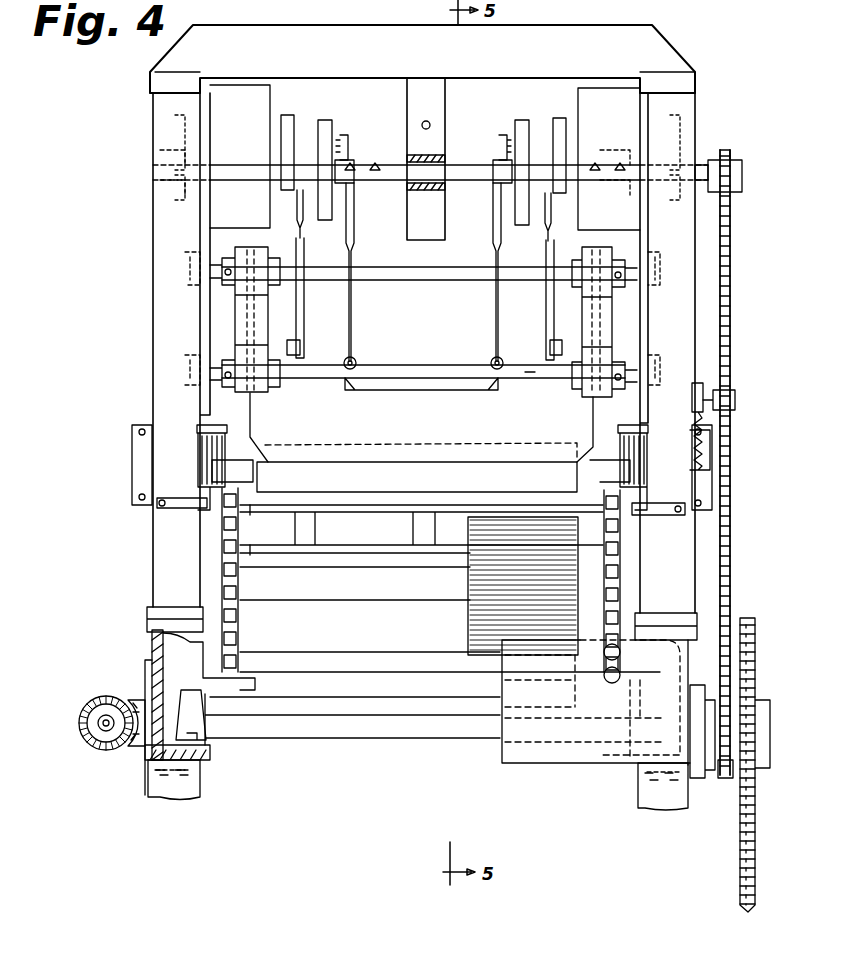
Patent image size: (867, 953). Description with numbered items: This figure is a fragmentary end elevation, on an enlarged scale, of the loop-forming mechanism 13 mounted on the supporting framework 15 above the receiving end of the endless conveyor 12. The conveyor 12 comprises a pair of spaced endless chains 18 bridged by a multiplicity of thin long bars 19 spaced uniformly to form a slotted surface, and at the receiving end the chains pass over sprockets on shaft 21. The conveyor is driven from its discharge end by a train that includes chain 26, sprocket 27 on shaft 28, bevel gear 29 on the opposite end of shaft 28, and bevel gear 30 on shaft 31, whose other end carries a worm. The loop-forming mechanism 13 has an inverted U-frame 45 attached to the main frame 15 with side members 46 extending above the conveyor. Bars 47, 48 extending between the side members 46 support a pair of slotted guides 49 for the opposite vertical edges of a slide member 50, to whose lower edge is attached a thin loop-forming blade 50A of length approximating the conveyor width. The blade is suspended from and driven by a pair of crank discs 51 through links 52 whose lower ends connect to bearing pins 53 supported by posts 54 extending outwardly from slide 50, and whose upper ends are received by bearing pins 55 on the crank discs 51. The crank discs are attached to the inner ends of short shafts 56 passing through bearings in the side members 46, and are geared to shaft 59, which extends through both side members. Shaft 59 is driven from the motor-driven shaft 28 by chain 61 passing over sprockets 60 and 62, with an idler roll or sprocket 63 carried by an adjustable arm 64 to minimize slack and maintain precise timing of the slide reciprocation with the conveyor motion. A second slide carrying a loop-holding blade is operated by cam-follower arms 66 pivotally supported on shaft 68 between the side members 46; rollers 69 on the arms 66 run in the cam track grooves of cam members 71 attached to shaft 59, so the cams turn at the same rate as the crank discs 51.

The endless conveyor 12 is at (490, 650).
The loop-forming mechanism 13 is at (146, 231).
The supporting framework 15 is at (192, 790).
The endless chains 18 is at (222, 540).
The bars 19 is at (257, 505).
The shaft 21 is at (340, 590).
The chain 26 is at (752, 866).
The sprocket 27 is at (752, 675).
The shaft 28 is at (310, 730).
The bevel gear 29 is at (125, 745).
The bevel gear 30 is at (80, 720).
The shaft 31 is at (103, 700).
The inverted U-frame 45 is at (163, 258).
The side members 46 is at (203, 300).
The bar 47 is at (402, 272).
The bar 48 is at (398, 372).
The slotted guides 49 is at (237, 310).
The slide member 50 is at (533, 367).
The loop-forming blade 50A is at (555, 490).
The crank discs 51 is at (290, 125).
The links 52 is at (303, 257).
The bearing pins 53 is at (350, 350).
The posts 54 is at (292, 360).
The bearing pins 55 is at (305, 200).
The short shafts 56 is at (596, 152).
The shaft 59 is at (702, 172).
The sprocket 60 is at (735, 160).
The chain 61 is at (730, 316).
The sprocket 62 is at (731, 778).
The idler roll or sprocket 63 is at (735, 402).
The arm 64 is at (700, 390).
The cam-follower arms 66 is at (355, 165).
The shaft 68 is at (386, 183).
The rollers 69 is at (345, 140).
The cam members 71 is at (328, 127).